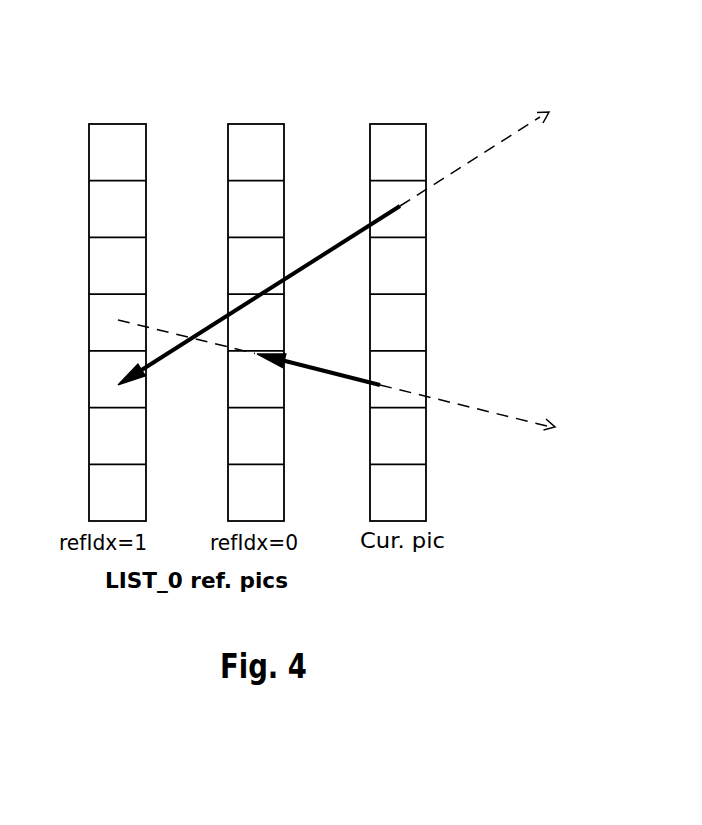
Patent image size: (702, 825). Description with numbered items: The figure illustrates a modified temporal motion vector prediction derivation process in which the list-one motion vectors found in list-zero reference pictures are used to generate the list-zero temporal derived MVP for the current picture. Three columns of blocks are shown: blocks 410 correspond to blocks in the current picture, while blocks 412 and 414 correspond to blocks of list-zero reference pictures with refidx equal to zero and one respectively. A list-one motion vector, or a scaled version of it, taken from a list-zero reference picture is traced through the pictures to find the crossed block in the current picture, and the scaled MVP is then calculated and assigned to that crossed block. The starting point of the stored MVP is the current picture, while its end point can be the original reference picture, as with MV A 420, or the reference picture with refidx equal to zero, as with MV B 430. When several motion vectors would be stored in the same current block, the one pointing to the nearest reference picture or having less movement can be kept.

The blocks in the current picture 410 is at (402, 98).
The blocks of LIST_0 reference picture with refidx equal to 0 412 is at (258, 98).
The blocks of LIST_0 reference picture with refidx equal to 1 414 is at (128, 98).
The MV A 420 is at (304, 270).
The MV B 430 is at (316, 360).